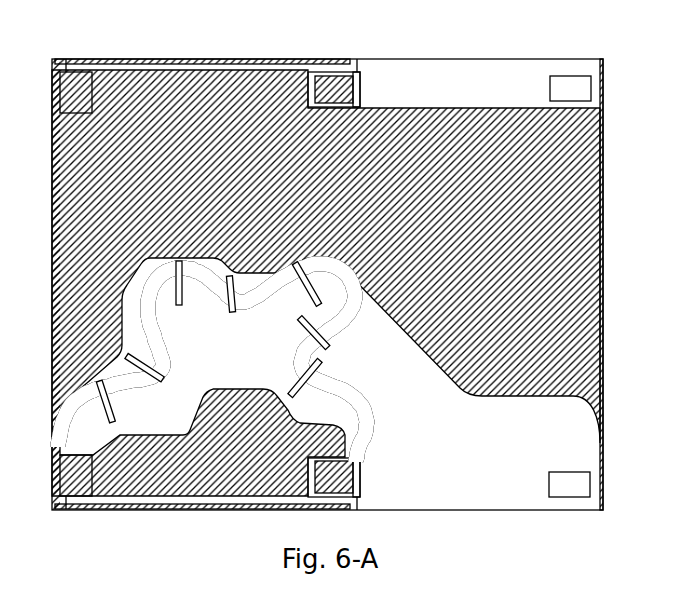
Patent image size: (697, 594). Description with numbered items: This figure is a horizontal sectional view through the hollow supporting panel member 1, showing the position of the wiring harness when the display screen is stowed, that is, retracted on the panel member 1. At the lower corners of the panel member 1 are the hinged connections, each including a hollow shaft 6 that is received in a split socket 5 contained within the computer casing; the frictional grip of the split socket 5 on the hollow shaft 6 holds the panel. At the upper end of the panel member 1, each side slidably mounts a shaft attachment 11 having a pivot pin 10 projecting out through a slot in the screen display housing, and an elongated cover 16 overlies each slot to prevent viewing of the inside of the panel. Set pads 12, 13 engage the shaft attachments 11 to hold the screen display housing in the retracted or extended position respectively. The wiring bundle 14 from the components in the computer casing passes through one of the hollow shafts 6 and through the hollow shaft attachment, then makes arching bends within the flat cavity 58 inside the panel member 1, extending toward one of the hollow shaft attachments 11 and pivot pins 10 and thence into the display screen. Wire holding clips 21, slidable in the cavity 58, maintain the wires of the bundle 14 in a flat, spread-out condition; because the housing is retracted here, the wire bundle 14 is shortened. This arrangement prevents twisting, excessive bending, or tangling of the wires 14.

The panel member 1 is at (614, 253).
The split socket 5 is at (67, 97).
The hollow shaft 6 is at (65, 57).
The pivot pin 10 is at (356, 61).
The shaft attachment 11 is at (360, 82).
The set pad 12 is at (310, 80).
The set pad 13 is at (574, 83).
The wiring bundle 14 is at (70, 414).
The elongated cover 16 is at (151, 65).
The wire holding clip 21 is at (112, 424).
The cavity 58 is at (454, 423).